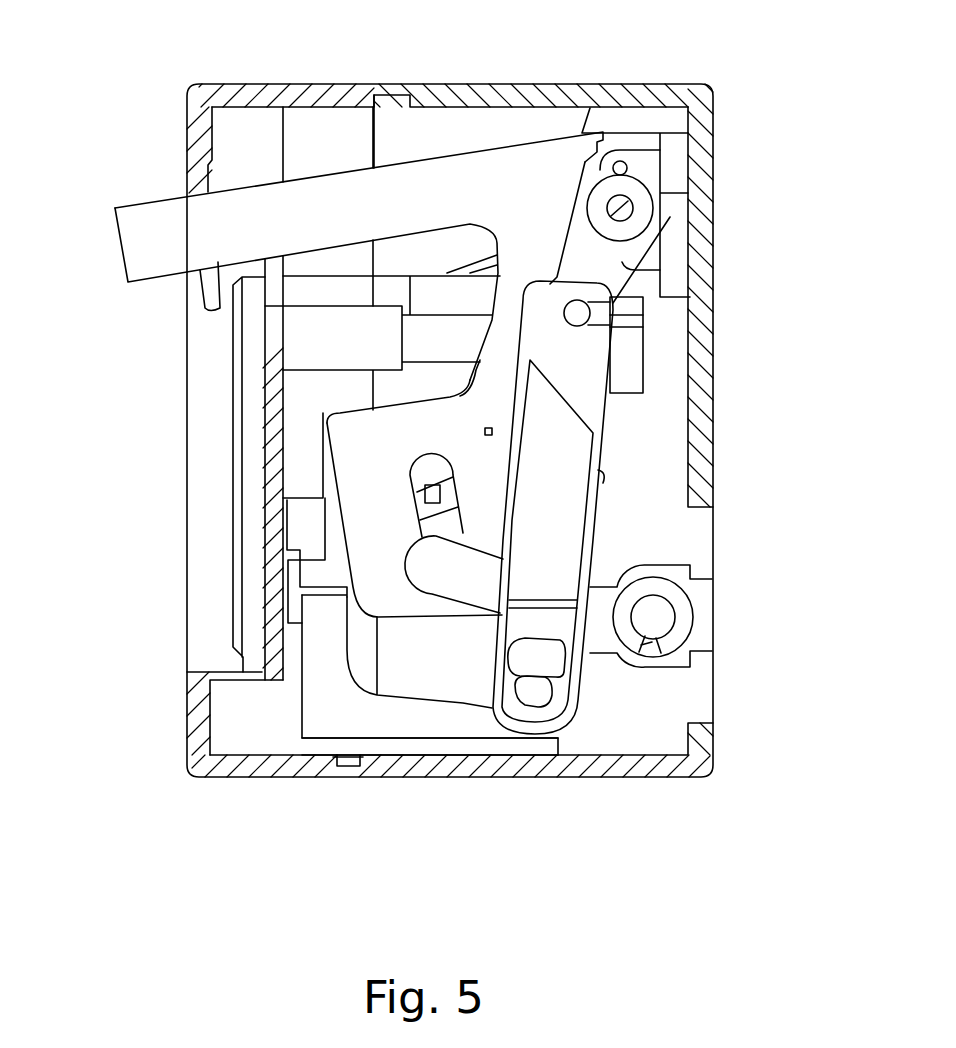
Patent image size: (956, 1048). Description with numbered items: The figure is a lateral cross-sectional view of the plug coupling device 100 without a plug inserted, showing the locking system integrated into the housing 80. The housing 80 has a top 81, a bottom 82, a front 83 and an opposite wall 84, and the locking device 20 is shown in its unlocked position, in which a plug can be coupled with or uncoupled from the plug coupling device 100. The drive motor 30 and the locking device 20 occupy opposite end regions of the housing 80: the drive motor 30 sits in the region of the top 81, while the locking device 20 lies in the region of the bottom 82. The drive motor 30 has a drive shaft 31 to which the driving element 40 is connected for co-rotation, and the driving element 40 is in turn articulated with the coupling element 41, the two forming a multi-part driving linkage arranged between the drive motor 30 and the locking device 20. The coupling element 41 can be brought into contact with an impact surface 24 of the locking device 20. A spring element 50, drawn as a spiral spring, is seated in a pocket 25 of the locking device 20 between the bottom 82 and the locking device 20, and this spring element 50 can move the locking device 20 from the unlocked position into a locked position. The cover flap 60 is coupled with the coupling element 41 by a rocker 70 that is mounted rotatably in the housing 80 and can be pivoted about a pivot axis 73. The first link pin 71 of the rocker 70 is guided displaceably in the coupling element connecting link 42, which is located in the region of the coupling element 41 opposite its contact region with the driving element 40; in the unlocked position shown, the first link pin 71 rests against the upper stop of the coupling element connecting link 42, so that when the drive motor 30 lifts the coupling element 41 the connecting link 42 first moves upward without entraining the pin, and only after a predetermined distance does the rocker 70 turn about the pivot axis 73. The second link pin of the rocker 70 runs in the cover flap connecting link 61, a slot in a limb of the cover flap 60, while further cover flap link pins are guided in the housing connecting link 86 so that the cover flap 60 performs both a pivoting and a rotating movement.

The plug coupling device 100 is at (730, 26).
The locking device 20 is at (323, 717).
The impact surface 24 is at (413, 720).
The pocket 25 is at (363, 672).
The drive motor 30 is at (650, 180).
The drive shaft 31 is at (618, 212).
The driving element 40 is at (622, 263).
The coupling element 41 is at (597, 367).
The coupling element connecting link 42 is at (545, 697).
The spring element 50 is at (360, 757).
The cover flap 60 is at (140, 217).
The cover flap connecting link 61 is at (453, 518).
The rocker 70 is at (485, 595).
The first link pin 71 is at (555, 657).
The pivot axis 73 is at (657, 617).
The housing 80 is at (443, 433).
The top 81 is at (522, 97).
The bottom 82 is at (663, 767).
The front 83 is at (200, 705).
The right wall 84 is at (702, 145).
The housing connecting link 86 is at (603, 477).